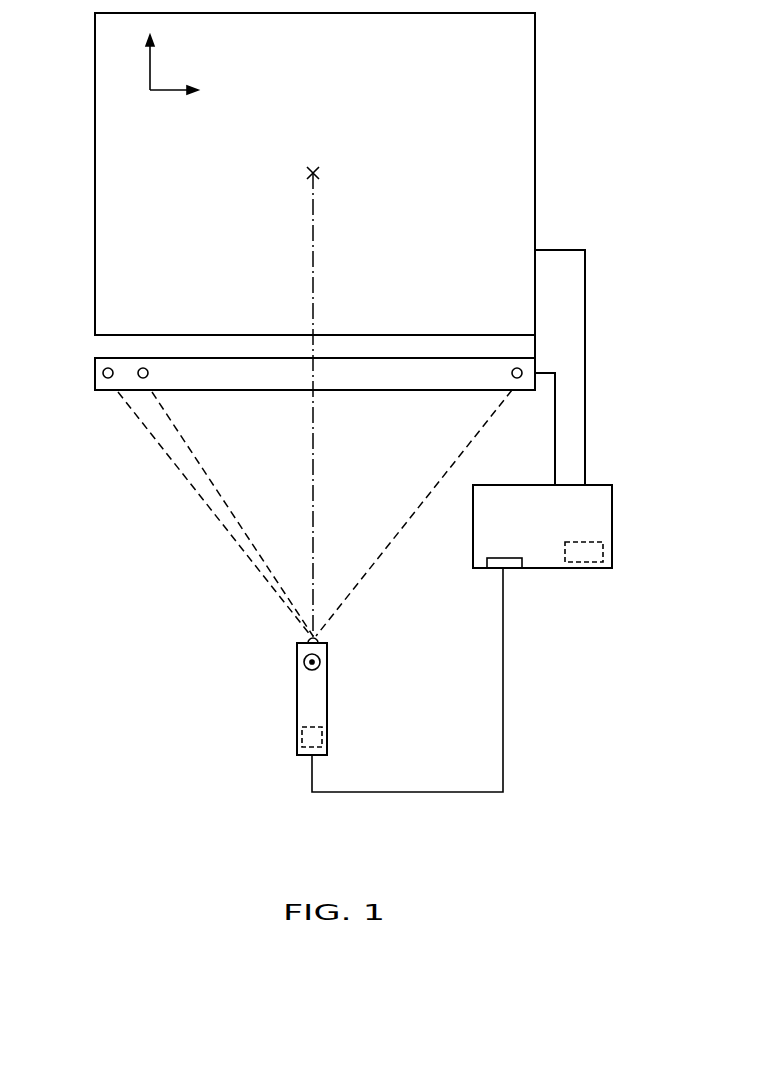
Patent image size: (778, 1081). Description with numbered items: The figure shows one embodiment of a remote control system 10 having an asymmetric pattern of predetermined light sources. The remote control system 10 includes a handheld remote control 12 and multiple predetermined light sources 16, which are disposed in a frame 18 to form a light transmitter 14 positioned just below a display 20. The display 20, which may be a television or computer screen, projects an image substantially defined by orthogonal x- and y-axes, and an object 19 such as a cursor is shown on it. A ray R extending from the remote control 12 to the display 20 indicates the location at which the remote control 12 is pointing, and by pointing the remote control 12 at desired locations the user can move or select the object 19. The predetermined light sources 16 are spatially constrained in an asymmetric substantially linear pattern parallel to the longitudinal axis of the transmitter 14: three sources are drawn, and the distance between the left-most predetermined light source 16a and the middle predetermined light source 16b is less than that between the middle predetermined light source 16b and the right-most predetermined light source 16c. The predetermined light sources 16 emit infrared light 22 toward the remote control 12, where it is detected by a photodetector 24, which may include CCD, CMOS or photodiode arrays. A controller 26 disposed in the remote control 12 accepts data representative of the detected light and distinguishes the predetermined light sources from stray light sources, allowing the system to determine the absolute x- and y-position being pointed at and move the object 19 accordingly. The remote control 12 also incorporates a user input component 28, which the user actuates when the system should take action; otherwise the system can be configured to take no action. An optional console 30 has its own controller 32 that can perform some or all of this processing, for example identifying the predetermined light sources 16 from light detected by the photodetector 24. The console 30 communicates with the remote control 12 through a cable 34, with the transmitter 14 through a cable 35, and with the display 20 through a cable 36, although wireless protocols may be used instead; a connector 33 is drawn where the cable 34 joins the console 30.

The remote control system 10 is at (101, 609).
The remote control 12 is at (328, 700).
The light transmitter 14 is at (258, 383).
The predetermined light sources 16 is at (309, 421).
The left-most predetermined light source 16a is at (108, 378).
The middle predetermined light source 16b is at (143, 378).
The right-most predetermined light source 16c is at (517, 378).
The frame 18 is at (407, 380).
The object 19 is at (322, 170).
The display 20 is at (95, 155).
The infrared light 22 is at (206, 496).
The photodetector 24 is at (325, 636).
The controller 26 is at (300, 731).
The user input component 28 is at (300, 659).
The console 30 is at (605, 513).
The controller 32 is at (606, 548).
The connector port 33 is at (513, 568).
The cable 34 is at (505, 768).
The cable 35 is at (550, 372).
The cable 36 is at (585, 296).
The ray R is at (318, 490).